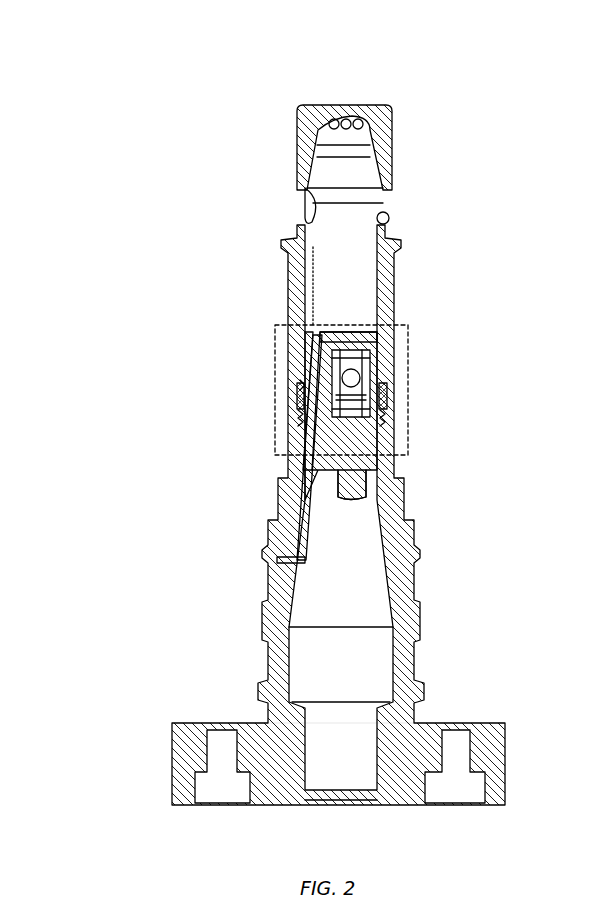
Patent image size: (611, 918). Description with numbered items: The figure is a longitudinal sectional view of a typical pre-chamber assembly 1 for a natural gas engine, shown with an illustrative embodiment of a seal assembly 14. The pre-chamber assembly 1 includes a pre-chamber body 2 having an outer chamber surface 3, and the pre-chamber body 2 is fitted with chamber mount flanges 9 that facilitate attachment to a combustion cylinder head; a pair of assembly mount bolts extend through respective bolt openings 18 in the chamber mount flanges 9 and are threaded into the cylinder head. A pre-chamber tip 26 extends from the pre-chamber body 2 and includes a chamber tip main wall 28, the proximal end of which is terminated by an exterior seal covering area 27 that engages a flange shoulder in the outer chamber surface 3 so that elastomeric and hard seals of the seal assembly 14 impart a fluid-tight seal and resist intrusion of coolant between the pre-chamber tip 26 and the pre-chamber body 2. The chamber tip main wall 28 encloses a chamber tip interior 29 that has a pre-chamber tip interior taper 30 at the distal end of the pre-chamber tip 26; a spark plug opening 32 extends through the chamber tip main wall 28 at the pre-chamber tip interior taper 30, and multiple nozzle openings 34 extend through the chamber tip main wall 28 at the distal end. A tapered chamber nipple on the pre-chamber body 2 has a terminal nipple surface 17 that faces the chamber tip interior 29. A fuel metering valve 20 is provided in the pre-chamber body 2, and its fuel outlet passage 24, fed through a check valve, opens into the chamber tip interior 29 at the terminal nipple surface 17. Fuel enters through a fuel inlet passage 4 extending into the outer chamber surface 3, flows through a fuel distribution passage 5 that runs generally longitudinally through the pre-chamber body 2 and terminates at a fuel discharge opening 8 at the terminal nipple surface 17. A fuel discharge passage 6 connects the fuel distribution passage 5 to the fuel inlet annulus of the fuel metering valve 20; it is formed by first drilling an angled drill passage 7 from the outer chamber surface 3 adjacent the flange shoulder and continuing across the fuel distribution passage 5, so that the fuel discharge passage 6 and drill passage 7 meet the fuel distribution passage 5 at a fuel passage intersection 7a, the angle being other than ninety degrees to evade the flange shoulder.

The pre-chamber assembly 1 is at (238, 95).
The pre-chamber body 2 is at (276, 503).
The outer chamber surface 3 is at (388, 398).
The fuel inlet passage 4 is at (298, 562).
The fuel distribution passage 5 is at (315, 474).
The fuel discharge passage 6 is at (356, 432).
The drill passage 7 is at (304, 434).
The fuel passage intersection 7a is at (310, 382).
The fuel discharge opening 8 is at (324, 334).
The chamber mount flanges 9 is at (192, 723).
The seal assembly 14 is at (410, 370).
The terminal nipple surface 17 is at (311, 300).
The bolt openings 18 is at (250, 790).
The fuel metering valve 20 is at (348, 503).
The fuel outlet passage 24 is at (366, 342).
The pre-chamber tip 26 is at (286, 283).
The exterior seal covering area 27 is at (299, 396).
The chamber tip main wall 28 is at (395, 258).
The chamber tip interior 29 is at (389, 222).
The pre-chamber tip interior taper 30 is at (385, 172).
The spark plug opening 32 is at (310, 198).
The nozzle openings 34 is at (358, 119).